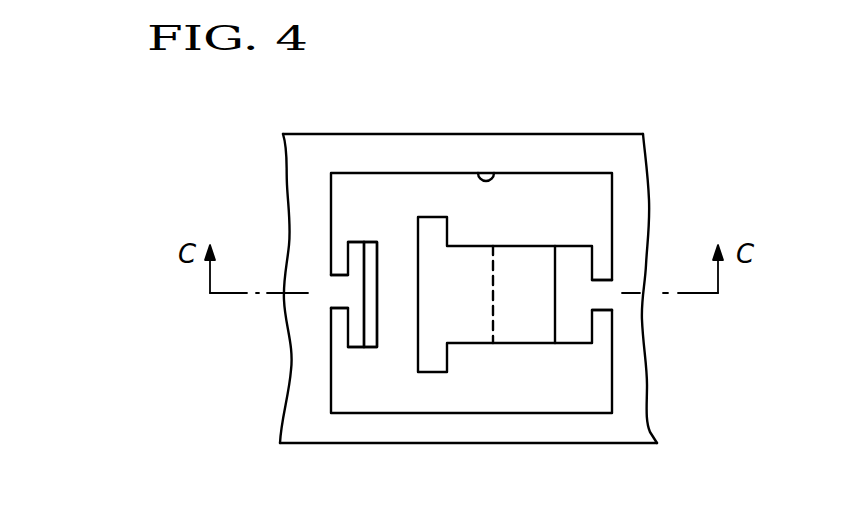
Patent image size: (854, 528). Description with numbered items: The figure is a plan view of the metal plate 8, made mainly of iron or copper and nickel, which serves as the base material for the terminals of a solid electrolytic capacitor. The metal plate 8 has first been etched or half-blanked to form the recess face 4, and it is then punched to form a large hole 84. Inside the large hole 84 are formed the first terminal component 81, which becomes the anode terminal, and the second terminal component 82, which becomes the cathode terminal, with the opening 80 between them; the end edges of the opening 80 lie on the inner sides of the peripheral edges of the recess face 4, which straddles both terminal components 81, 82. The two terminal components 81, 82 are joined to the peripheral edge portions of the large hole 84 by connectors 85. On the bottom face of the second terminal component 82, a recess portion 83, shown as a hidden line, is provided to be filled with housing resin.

The recess face 4 is at (365, 260).
The metal plate 8 is at (628, 160).
The opening 80 is at (377, 313).
The first terminal component 81 is at (356, 252).
The second terminal component 82 is at (433, 225).
The recess portion 83 is at (493, 298).
The large hole 84 is at (488, 184).
The connectors 85 is at (342, 282).